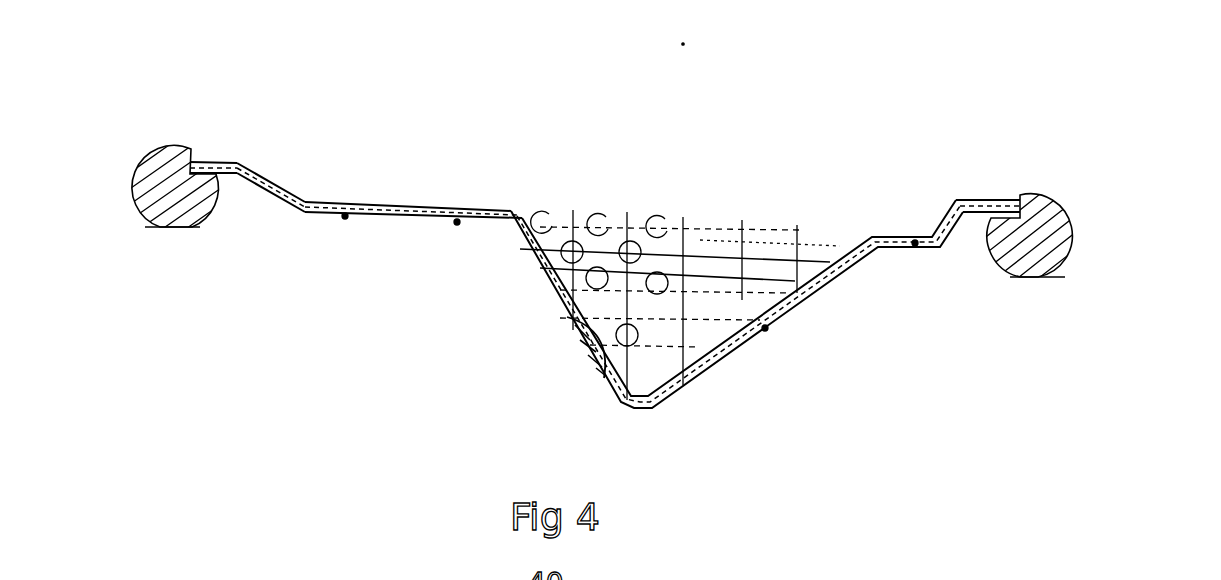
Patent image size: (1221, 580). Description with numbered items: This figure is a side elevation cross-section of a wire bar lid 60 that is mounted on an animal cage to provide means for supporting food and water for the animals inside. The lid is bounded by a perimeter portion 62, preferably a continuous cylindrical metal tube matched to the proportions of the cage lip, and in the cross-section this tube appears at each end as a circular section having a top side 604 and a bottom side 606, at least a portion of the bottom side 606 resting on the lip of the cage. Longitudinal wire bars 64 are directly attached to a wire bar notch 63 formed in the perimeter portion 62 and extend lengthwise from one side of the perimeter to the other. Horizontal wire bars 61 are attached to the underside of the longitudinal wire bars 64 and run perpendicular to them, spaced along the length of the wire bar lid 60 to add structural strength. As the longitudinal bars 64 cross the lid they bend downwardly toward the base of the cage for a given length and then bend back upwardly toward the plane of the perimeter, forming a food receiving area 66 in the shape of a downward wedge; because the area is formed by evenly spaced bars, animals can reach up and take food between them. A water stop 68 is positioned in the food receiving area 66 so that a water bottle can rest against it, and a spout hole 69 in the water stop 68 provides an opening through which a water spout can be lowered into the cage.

The wire bar lid 60 is at (422, 306).
The horizontal wire bars 61 is at (457, 212).
The perimeter portion 62 is at (158, 230).
The wire bar notch 63 is at (202, 148).
The longitudinal wire bars 64 is at (308, 205).
The food receiving area 66 is at (668, 295).
The water stop 68 is at (568, 334).
The spout hole 69 is at (584, 345).
The top side 604 is at (177, 150).
The bottom side 606 is at (185, 229).